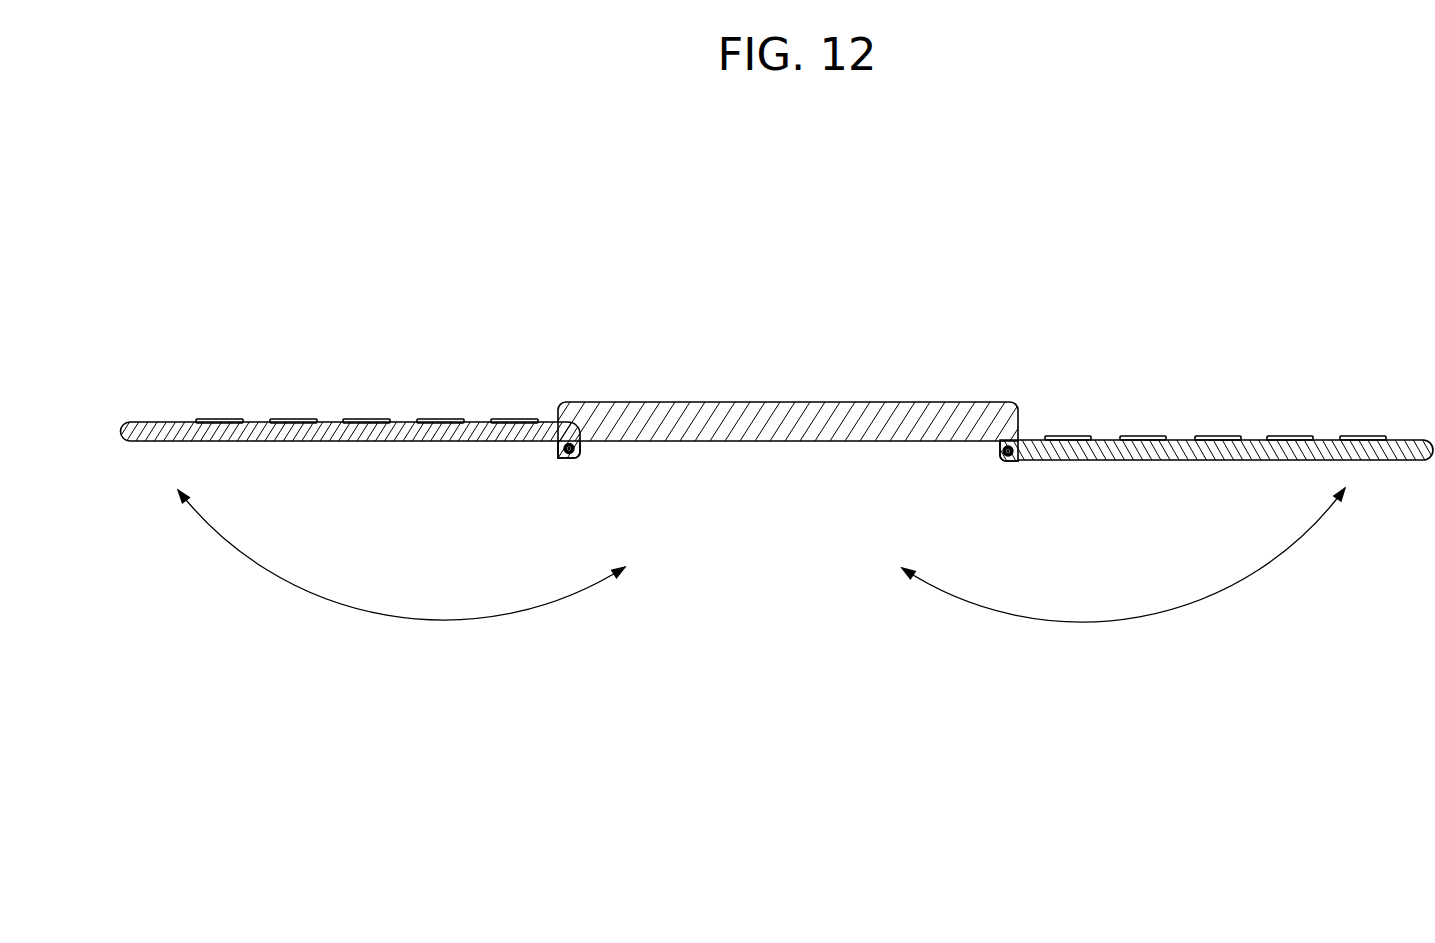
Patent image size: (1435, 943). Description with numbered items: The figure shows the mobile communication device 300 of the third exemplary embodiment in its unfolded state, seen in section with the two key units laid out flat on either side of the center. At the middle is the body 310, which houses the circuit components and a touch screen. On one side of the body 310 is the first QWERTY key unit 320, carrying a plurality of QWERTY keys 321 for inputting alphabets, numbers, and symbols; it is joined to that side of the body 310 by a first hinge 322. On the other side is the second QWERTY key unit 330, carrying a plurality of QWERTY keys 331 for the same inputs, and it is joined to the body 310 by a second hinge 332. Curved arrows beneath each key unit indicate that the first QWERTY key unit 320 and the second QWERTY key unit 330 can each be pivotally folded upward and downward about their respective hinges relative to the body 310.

The mobile communication device 300 is at (883, 343).
The body 310 is at (763, 409).
The first QWERTY key unit 320 is at (1185, 438).
The QWERTY keys 321 is at (1283, 437).
The first hinge 322 is at (1003, 462).
The second QWERTY key unit 330 is at (471, 422).
The QWERTY key 331 is at (288, 419).
The second hinge 332 is at (573, 459).